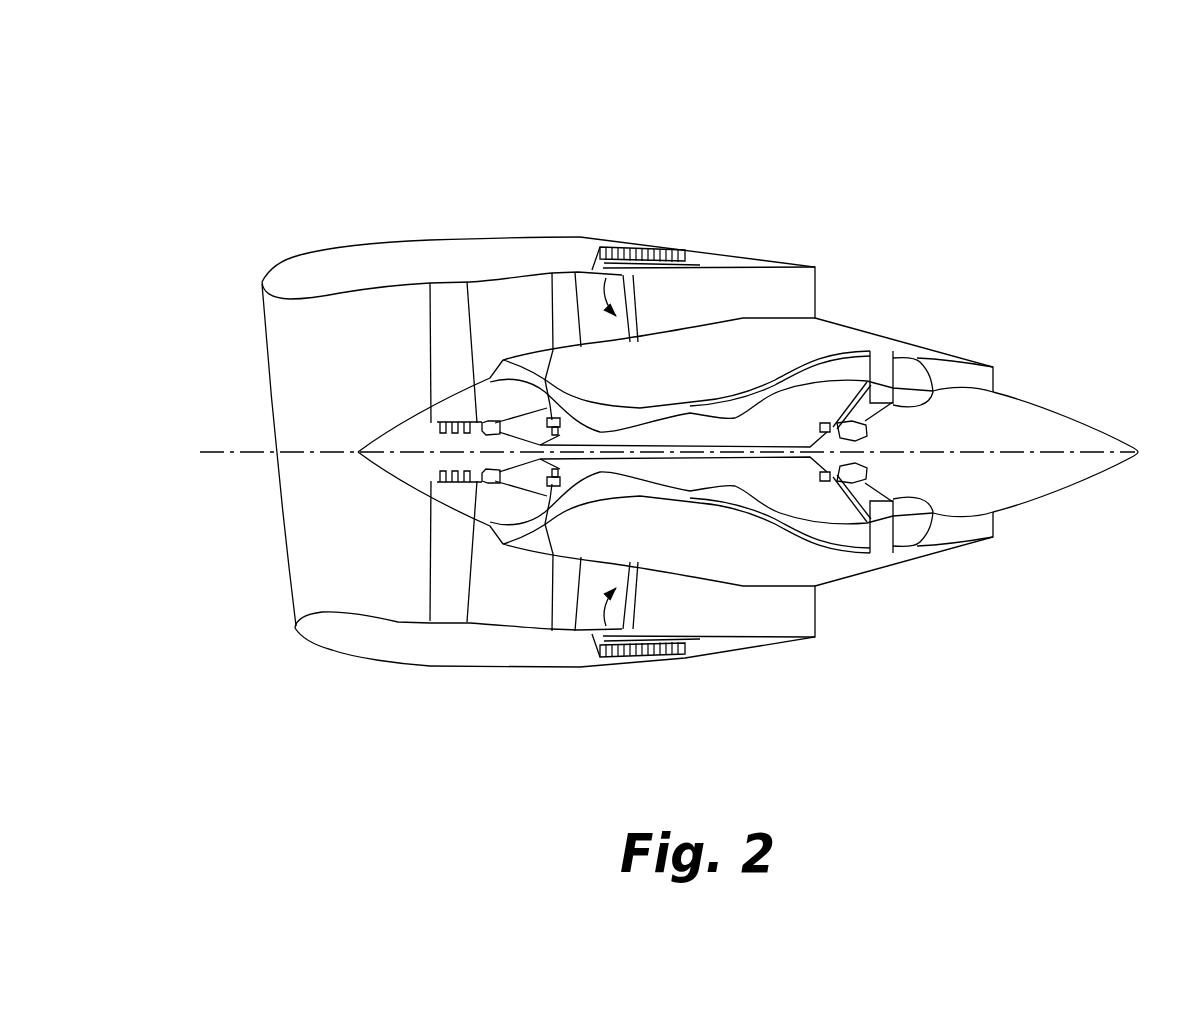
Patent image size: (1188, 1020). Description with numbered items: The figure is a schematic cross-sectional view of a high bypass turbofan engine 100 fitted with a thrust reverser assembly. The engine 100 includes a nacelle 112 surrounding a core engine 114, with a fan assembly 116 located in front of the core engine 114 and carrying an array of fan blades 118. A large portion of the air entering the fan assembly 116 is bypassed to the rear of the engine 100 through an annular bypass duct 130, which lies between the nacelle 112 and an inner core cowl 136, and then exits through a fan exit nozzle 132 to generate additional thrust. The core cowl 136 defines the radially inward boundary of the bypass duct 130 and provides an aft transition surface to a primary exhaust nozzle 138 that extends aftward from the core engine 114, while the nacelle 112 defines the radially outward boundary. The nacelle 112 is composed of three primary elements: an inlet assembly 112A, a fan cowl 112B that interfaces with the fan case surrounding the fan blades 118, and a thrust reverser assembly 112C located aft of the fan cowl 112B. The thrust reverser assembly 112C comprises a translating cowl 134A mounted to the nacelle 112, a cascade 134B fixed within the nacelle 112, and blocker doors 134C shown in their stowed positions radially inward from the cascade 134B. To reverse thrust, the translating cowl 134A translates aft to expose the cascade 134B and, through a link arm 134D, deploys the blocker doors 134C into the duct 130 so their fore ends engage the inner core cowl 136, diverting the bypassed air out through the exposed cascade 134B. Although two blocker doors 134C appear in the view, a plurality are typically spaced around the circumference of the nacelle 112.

The high bypass turbofan engine 100 is at (898, 160).
The nacelle 112 is at (430, 222).
The inlet assembly 112A is at (343, 246).
The fan cowl 112B is at (520, 235).
The thrust reverser assembly 112C is at (675, 435).
The core engine 114 is at (840, 566).
The fan assembly 116 is at (362, 545).
The fan blades 118 is at (440, 348).
The bypass duct 130 is at (540, 323).
The fan exit nozzle 132 is at (845, 291).
The translating cowl 134A is at (753, 253).
The cascade 134B is at (666, 248).
The blocker doors 134C is at (631, 247).
The link arm 134D is at (682, 308).
The inner core cowl 136 is at (745, 317).
The primary exhaust nozzle 138 is at (940, 348).